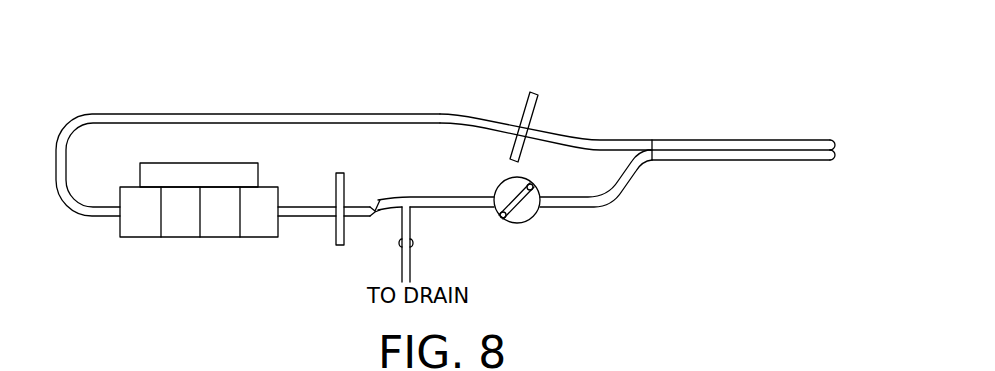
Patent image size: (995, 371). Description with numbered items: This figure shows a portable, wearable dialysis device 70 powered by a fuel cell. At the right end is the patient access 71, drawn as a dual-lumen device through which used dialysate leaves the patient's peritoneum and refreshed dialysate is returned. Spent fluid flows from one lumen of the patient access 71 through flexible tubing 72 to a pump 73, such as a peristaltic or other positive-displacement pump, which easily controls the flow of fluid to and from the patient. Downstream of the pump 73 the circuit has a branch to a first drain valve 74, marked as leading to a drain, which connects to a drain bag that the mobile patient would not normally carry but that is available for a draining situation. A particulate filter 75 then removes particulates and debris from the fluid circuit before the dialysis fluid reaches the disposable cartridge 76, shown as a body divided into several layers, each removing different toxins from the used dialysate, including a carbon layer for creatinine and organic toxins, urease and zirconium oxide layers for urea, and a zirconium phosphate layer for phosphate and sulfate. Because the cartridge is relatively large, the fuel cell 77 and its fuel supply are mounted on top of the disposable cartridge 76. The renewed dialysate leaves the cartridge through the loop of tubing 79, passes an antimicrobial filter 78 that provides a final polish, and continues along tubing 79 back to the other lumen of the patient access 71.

The portable, wearable dialysis device 70 is at (144, 84).
The patient access 71 is at (750, 160).
The tubing 72 is at (626, 188).
The pump 73 is at (532, 221).
The first drain valve 74 is at (406, 242).
The particulate filter 75 is at (345, 184).
The disposable cartridge 76 is at (138, 238).
The fuel cell 77 is at (250, 163).
The antimicrobial filter 78 is at (523, 107).
The tubing 79 is at (597, 138).